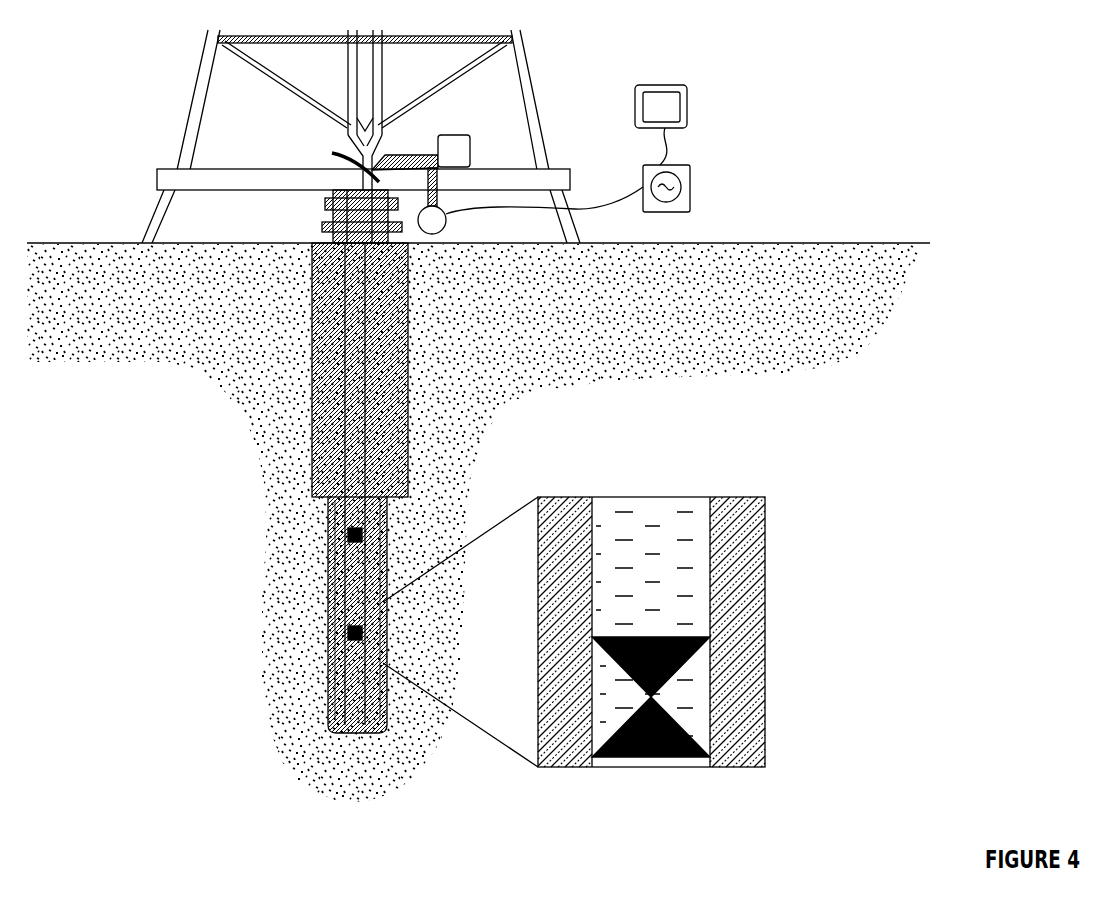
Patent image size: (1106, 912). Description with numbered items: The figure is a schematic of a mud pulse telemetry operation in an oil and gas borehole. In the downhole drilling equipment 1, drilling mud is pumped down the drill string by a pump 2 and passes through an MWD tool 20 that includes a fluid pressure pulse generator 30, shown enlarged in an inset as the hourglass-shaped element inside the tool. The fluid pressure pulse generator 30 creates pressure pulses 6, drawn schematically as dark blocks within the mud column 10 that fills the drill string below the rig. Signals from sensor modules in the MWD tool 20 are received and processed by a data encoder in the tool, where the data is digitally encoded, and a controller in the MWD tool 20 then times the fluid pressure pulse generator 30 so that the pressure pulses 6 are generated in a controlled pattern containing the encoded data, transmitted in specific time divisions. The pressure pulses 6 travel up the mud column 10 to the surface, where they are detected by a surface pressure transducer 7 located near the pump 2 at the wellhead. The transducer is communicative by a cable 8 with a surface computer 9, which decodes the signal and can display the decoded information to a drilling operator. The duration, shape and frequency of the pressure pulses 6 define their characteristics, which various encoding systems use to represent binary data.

The downhole drilling equipment 1 is at (170, 70).
The pump 2 is at (466, 141).
The pressure pulses 6 is at (245, 538).
The surface pressure transducer 7 is at (438, 222).
The cable 8 is at (603, 208).
The surface computer 9 is at (680, 94).
The mud column 10 is at (362, 452).
The MWD tool 20 is at (365, 632).
The fluid pressure pulse generator 30 is at (653, 767).